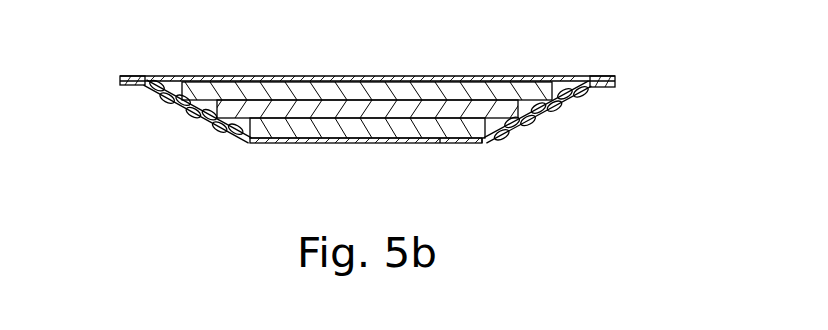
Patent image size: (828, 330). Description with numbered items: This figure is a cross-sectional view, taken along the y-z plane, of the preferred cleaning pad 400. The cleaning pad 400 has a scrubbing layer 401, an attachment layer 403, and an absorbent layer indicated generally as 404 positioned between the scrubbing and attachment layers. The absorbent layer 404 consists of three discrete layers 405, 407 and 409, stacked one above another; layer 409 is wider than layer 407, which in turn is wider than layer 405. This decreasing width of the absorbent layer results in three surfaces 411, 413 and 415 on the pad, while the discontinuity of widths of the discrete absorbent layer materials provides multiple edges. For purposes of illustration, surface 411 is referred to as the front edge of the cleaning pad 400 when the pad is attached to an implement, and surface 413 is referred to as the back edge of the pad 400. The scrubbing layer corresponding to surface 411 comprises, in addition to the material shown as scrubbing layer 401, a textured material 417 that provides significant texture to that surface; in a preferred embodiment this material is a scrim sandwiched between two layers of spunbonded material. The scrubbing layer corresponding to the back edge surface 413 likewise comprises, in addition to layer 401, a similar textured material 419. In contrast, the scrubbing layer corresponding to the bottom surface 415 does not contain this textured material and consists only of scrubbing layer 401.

The cleaning pad 400 is at (222, 60).
The scrubbing layer 401 is at (272, 143).
The attachment layer 403 is at (418, 78).
The absorbent layer 404 is at (183, 118).
The discrete absorbent layer 405 is at (473, 143).
The discrete absorbent layer 407 is at (492, 100).
The discrete absorbent layer 409 is at (532, 92).
The front edge surface 411 is at (195, 141).
The back edge surface 413 is at (559, 128).
The bottom surface 415 is at (353, 153).
The textured material 417 is at (155, 93).
The textured material 419 is at (585, 97).